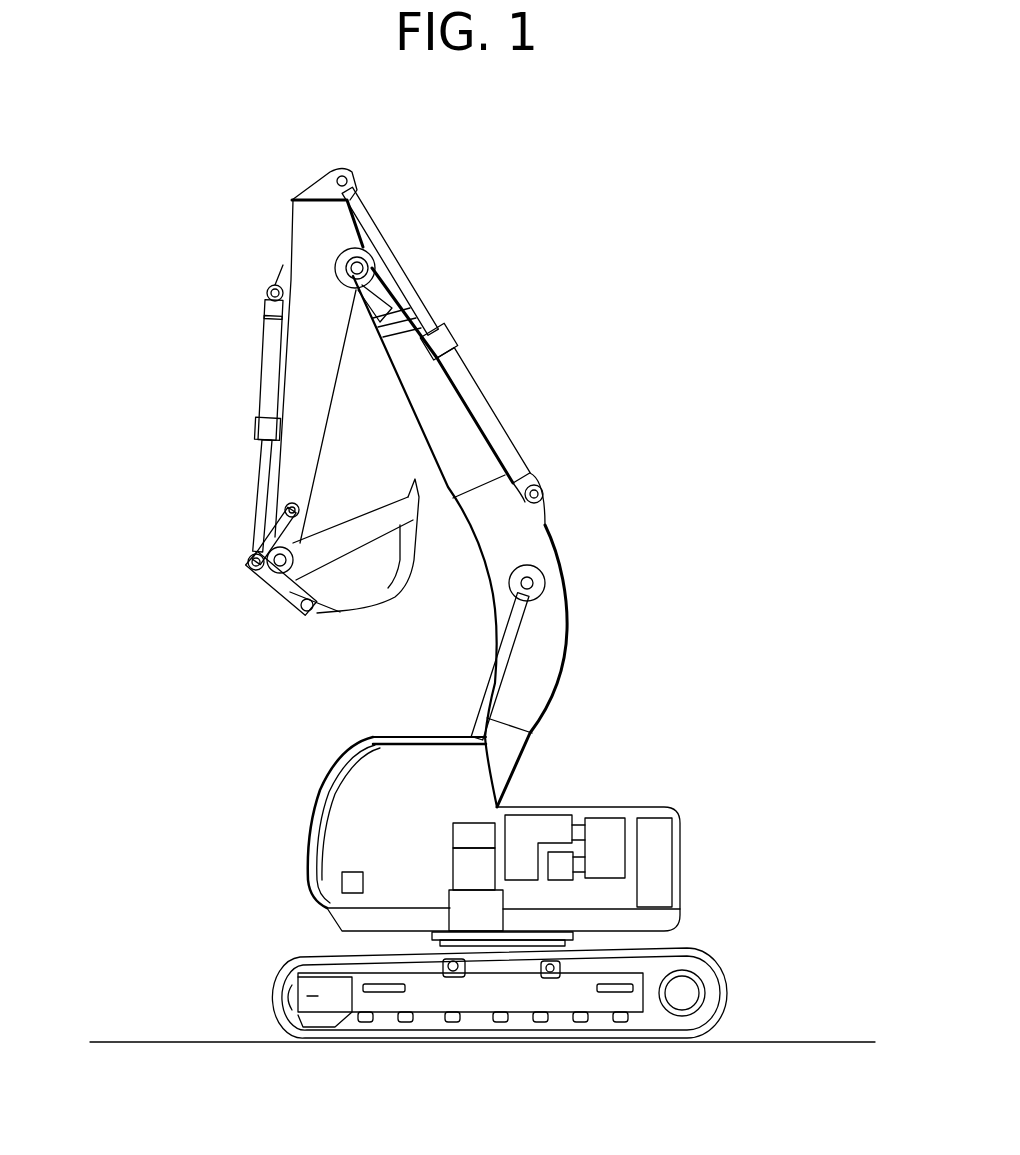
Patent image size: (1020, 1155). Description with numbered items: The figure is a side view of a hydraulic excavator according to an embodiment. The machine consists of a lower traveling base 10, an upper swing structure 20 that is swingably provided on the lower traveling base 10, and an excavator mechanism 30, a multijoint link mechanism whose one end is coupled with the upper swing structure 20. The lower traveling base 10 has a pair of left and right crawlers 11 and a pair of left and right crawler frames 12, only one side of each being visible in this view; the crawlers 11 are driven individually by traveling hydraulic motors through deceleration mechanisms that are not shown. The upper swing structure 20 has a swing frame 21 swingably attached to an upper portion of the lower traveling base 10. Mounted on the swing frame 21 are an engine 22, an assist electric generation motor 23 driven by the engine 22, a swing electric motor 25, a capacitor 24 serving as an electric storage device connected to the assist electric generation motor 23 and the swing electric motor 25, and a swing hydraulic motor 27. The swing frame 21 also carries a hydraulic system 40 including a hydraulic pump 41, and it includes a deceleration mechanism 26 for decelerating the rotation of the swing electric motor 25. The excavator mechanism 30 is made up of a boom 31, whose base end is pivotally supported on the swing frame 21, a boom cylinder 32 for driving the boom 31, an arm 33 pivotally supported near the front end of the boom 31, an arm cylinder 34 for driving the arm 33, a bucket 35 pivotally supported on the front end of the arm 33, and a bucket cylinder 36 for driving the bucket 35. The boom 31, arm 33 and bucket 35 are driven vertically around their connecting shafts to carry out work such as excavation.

The lower traveling base 10 is at (286, 948).
The crawler 11 is at (730, 985).
The crawler frame 12 is at (478, 990).
The upper swing structure 20 is at (322, 775).
The swing frame 21 is at (683, 917).
The engine 22 is at (620, 823).
The assist electric generation motor 23 is at (558, 872).
The capacitor 24 is at (665, 865).
The swing electric motor 25 is at (455, 872).
The deceleration mechanism 26 is at (457, 903).
The swing hydraulic motor 27 is at (453, 830).
The excavator mechanism 30 is at (490, 285).
The boom 31 is at (553, 615).
The boom cylinder 32 is at (493, 683).
The arm 33 is at (303, 228).
The arm cylinder 34 is at (478, 400).
The bucket 35 is at (373, 597).
The bucket cylinder 36 is at (266, 360).
The hydraulic system 40 is at (533, 823).
The hydraulic pump 41 is at (338, 882).